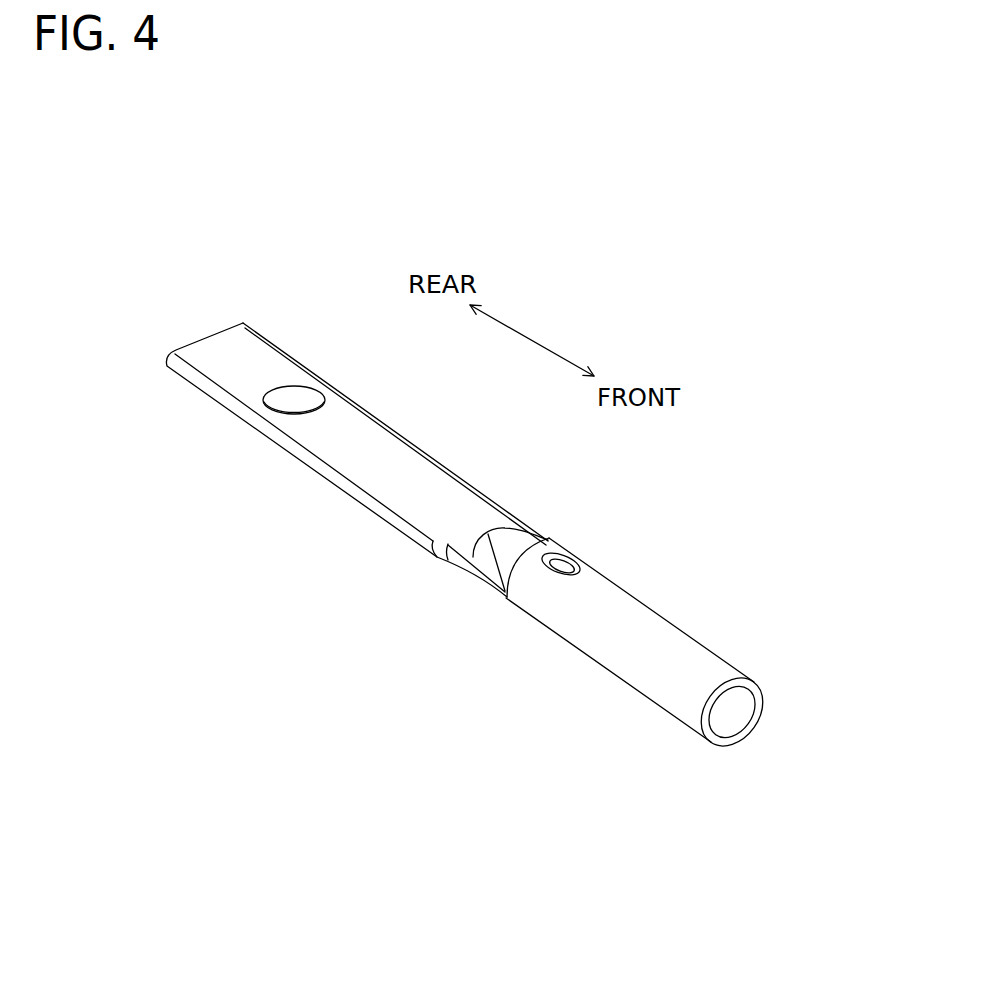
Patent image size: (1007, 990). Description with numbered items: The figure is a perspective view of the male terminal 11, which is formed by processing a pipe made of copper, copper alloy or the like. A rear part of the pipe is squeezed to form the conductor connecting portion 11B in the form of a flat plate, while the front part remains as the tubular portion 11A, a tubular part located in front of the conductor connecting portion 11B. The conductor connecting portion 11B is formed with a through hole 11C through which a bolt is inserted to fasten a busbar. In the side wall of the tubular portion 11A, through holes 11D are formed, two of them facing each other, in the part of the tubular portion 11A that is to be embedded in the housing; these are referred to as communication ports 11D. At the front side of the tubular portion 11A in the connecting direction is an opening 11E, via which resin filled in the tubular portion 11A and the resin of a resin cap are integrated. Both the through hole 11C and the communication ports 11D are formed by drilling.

The male terminal 11 is at (499, 469).
The tubular portion 11A is at (647, 633).
The conductor connecting portion 11B is at (367, 447).
The through hole 11C is at (295, 389).
The through hole / communication port 11D is at (560, 563).
The opening 11E is at (729, 716).